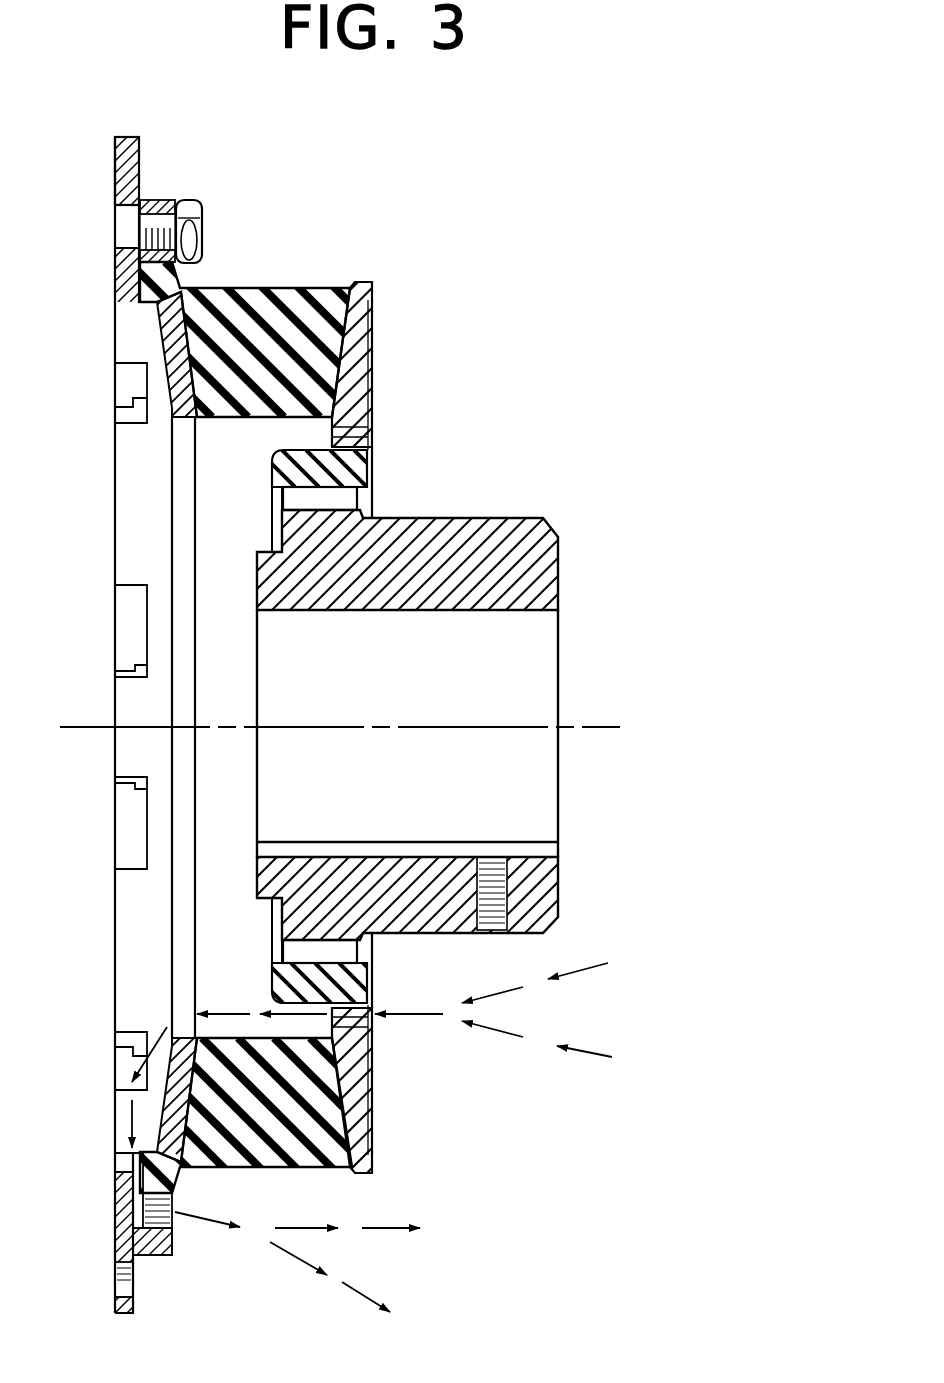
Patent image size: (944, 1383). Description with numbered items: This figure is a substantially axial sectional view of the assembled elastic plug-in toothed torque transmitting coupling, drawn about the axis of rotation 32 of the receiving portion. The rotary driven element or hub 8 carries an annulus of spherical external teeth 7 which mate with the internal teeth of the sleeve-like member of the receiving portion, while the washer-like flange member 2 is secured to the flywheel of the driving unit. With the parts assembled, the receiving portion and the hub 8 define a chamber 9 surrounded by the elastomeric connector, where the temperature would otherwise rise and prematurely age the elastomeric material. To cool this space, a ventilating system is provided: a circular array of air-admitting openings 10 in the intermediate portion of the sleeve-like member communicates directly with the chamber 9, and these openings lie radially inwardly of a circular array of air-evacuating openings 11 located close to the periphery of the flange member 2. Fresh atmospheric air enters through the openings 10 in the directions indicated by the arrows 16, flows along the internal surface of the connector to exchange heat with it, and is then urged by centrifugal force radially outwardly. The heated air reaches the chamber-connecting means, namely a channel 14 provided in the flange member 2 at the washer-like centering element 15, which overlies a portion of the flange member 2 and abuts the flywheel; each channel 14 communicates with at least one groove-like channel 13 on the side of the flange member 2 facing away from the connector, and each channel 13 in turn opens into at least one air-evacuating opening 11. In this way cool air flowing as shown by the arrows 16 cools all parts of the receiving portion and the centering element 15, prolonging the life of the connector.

The flange member 2 is at (155, 198).
The spherical external teeth 7 is at (363, 506).
The rotary driven element (hub) 8 is at (522, 518).
The chamber 9 is at (236, 658).
The air-admitting openings 10 is at (372, 1025).
The air-evacuating openings 11 is at (178, 1227).
The groove-like channels 13 is at (130, 1178).
The channel 14 is at (120, 1163).
The centering element 15 is at (117, 160).
The arrows 16 is at (593, 967).
The axis of rotation 32 is at (578, 727).